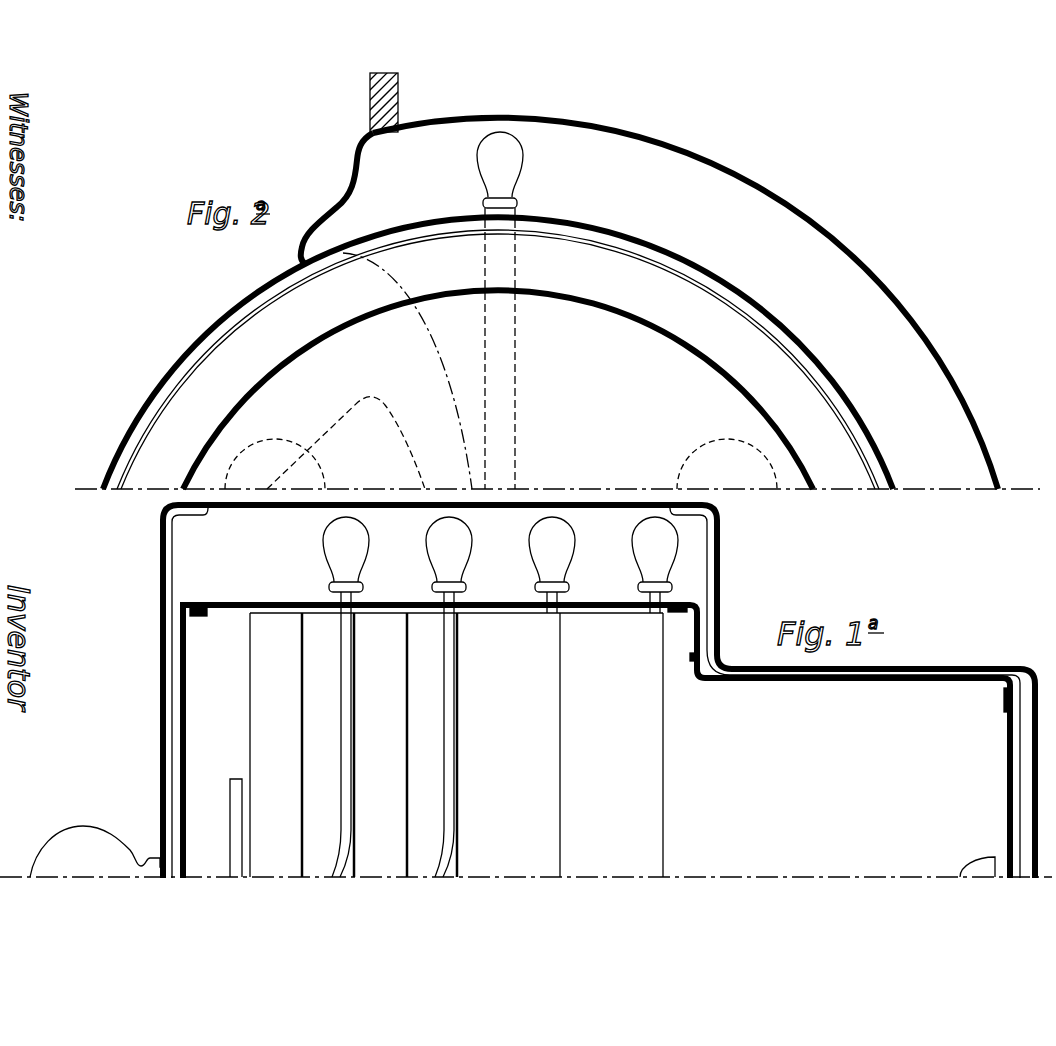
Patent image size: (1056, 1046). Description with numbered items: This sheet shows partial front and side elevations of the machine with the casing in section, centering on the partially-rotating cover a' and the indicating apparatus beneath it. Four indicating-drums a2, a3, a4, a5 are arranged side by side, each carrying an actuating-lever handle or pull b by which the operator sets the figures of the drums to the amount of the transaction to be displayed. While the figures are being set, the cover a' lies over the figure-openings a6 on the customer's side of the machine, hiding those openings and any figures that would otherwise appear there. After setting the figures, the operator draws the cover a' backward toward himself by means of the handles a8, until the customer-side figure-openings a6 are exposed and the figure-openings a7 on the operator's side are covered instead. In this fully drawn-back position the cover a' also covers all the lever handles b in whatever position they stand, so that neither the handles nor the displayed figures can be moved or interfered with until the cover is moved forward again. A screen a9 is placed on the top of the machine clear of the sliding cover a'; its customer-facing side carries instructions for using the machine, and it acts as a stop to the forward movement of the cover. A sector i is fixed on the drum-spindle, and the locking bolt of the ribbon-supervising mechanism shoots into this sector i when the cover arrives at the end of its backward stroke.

In FIG. 2a, the partially-rotating cover a' is at (550, 303).
In FIG. 1a, the partially-rotating cover a' is at (599, 691).
In FIG. 1a, the indicating-drum a2 is at (302, 745).
In FIG. 1a, the indicating-drum a3 is at (432, 745).
In FIG. 1a, the indicating-drum a4 is at (540, 745).
In FIG. 1a, the indicating-drum a5 is at (645, 745).
In FIG. 2a, the figure-openings a6 is at (283, 270).
In FIG. 2a, the figure-openings a7 is at (700, 268).
In FIG. 1a, the handles a8 is at (96, 851).
In FIG. 2a, the screen a9 is at (370, 100).
In FIG. 2a, the actuating-lever handles b is at (506, 189).
In FIG. 1a, the actuating-lever handles b is at (501, 697).
In FIG. 1a, the sector i is at (230, 798).